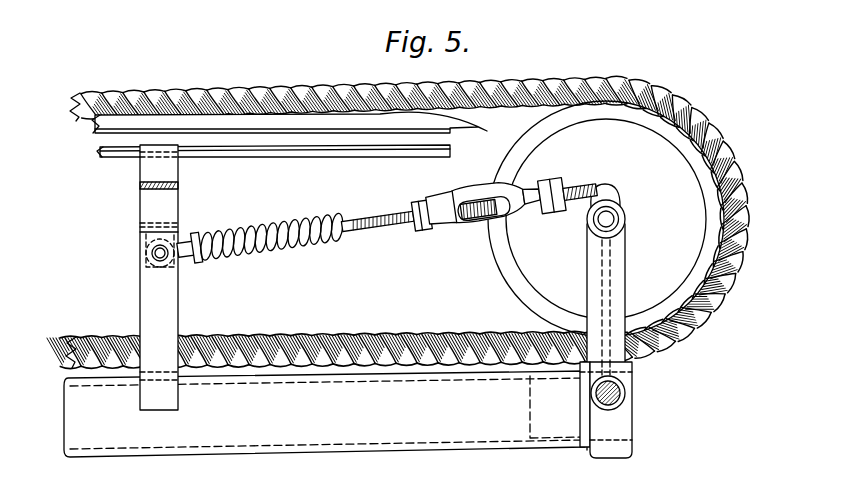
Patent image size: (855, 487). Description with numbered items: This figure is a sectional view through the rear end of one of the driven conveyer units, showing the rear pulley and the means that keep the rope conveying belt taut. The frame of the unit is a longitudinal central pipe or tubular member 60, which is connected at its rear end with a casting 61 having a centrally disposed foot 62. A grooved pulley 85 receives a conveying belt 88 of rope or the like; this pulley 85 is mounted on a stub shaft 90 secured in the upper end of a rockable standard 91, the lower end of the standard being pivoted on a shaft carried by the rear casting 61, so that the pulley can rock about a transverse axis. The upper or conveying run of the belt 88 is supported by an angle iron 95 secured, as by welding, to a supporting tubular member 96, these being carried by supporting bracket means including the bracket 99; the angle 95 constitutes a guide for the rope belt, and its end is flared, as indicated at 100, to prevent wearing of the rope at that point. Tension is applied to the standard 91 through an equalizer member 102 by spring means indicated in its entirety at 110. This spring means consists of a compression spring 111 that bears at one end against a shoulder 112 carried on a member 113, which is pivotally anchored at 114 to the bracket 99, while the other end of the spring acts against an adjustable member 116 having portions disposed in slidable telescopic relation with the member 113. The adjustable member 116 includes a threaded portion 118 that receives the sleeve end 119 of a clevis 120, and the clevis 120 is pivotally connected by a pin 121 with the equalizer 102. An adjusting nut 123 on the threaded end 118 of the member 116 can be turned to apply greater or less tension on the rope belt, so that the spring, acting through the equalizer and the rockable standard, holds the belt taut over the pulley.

The tubular member 60 is at (276, 441).
The casting 61 is at (584, 448).
The foot 62 is at (624, 441).
The pulley 85 is at (730, 191).
The conveying belt 88 is at (238, 97).
The stub shaft 90 is at (613, 213).
The rockable standard 91 is at (623, 250).
The angle iron 95 is at (426, 110).
The supporting tubular member 96 is at (354, 148).
The supporting bracket 99 is at (134, 207).
The flared end 100 is at (512, 94).
The equalizer member 102 is at (569, 192).
The spring means 110 is at (381, 224).
The compression spring 111 is at (292, 222).
The shoulder 112 is at (201, 230).
The member 113 is at (189, 254).
The pivotal anchor 114 is at (156, 256).
The adjustable member 116 is at (385, 214).
The threaded portion 118 is at (472, 196).
The sleeve end 119 is at (436, 203).
The clevis 120 is at (513, 210).
The pin 121 is at (548, 182).
The adjusting nut 123 is at (423, 235).